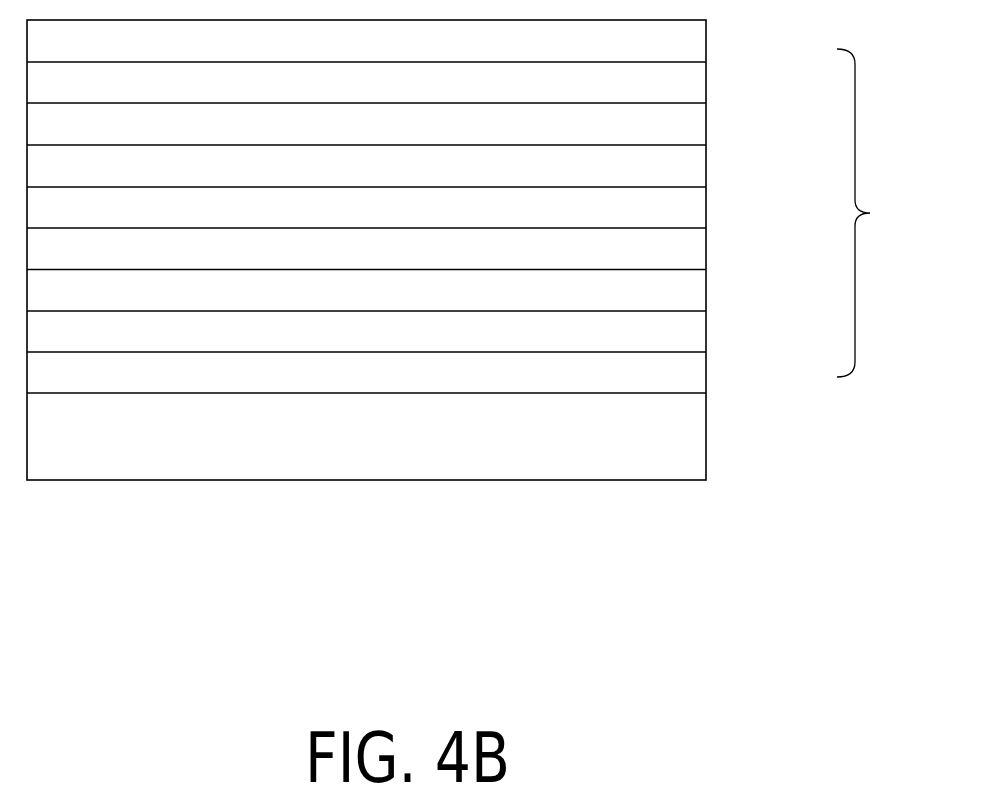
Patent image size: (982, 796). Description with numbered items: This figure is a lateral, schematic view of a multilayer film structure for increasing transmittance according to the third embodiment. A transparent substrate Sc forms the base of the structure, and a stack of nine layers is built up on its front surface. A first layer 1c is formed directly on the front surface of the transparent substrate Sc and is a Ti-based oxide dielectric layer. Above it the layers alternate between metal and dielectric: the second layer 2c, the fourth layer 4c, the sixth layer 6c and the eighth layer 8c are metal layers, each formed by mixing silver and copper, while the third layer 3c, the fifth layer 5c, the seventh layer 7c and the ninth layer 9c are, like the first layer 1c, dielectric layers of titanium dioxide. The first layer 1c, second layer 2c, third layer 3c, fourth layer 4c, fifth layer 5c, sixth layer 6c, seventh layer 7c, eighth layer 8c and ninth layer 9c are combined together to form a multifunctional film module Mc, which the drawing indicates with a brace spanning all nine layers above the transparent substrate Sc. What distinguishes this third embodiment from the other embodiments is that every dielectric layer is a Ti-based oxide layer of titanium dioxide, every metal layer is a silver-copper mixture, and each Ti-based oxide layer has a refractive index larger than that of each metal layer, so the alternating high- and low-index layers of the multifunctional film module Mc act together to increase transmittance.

The first layer 1c is at (687, 379).
The second layer 2c is at (687, 337).
The third layer 3c is at (687, 296).
The fourth layer 4c is at (687, 254).
The fifth layer 5c is at (687, 213).
The sixth layer 6c is at (687, 172).
The seventh layer 7c is at (687, 130).
The eighth layer 8c is at (687, 89).
The ninth layer 9c is at (687, 47).
The transparent substrate Sc is at (687, 445).
The multifunctional film module Mc is at (876, 213).